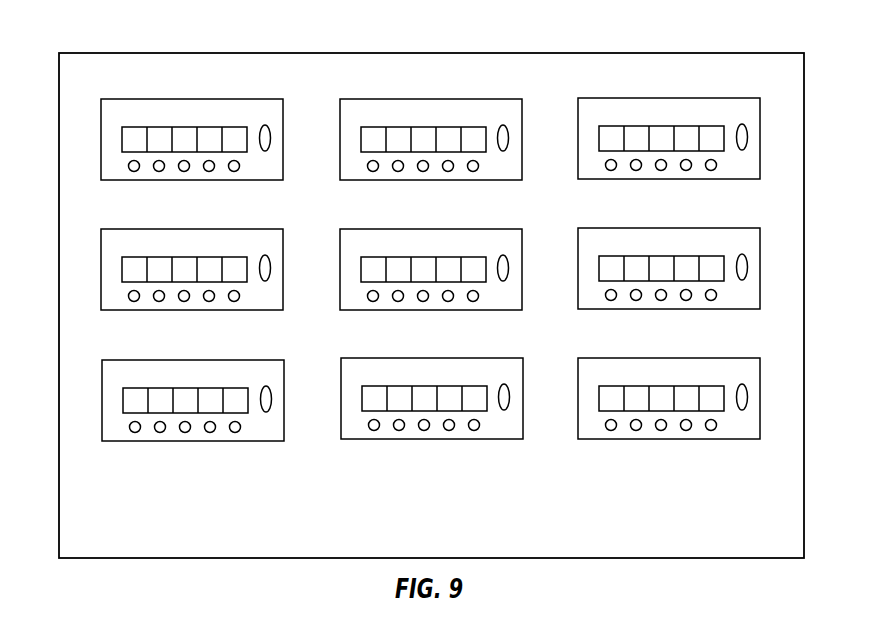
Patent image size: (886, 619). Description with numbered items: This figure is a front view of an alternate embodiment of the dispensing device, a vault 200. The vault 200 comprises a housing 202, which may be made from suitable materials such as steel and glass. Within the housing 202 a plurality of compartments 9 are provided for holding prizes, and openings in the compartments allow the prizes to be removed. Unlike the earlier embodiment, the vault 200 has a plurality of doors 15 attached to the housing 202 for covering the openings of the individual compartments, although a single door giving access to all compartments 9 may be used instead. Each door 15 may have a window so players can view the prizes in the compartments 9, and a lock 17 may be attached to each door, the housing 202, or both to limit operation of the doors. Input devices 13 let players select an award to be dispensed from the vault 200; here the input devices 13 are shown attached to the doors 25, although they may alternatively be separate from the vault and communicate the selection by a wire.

The compartment 9 is at (210, 127).
The input device 13 is at (133, 173).
The door 15 is at (271, 146).
The lock 17 is at (270, 145).
The doors 25 is at (160, 176).
The vault 200 is at (462, 282).
The housing 202 is at (788, 108).